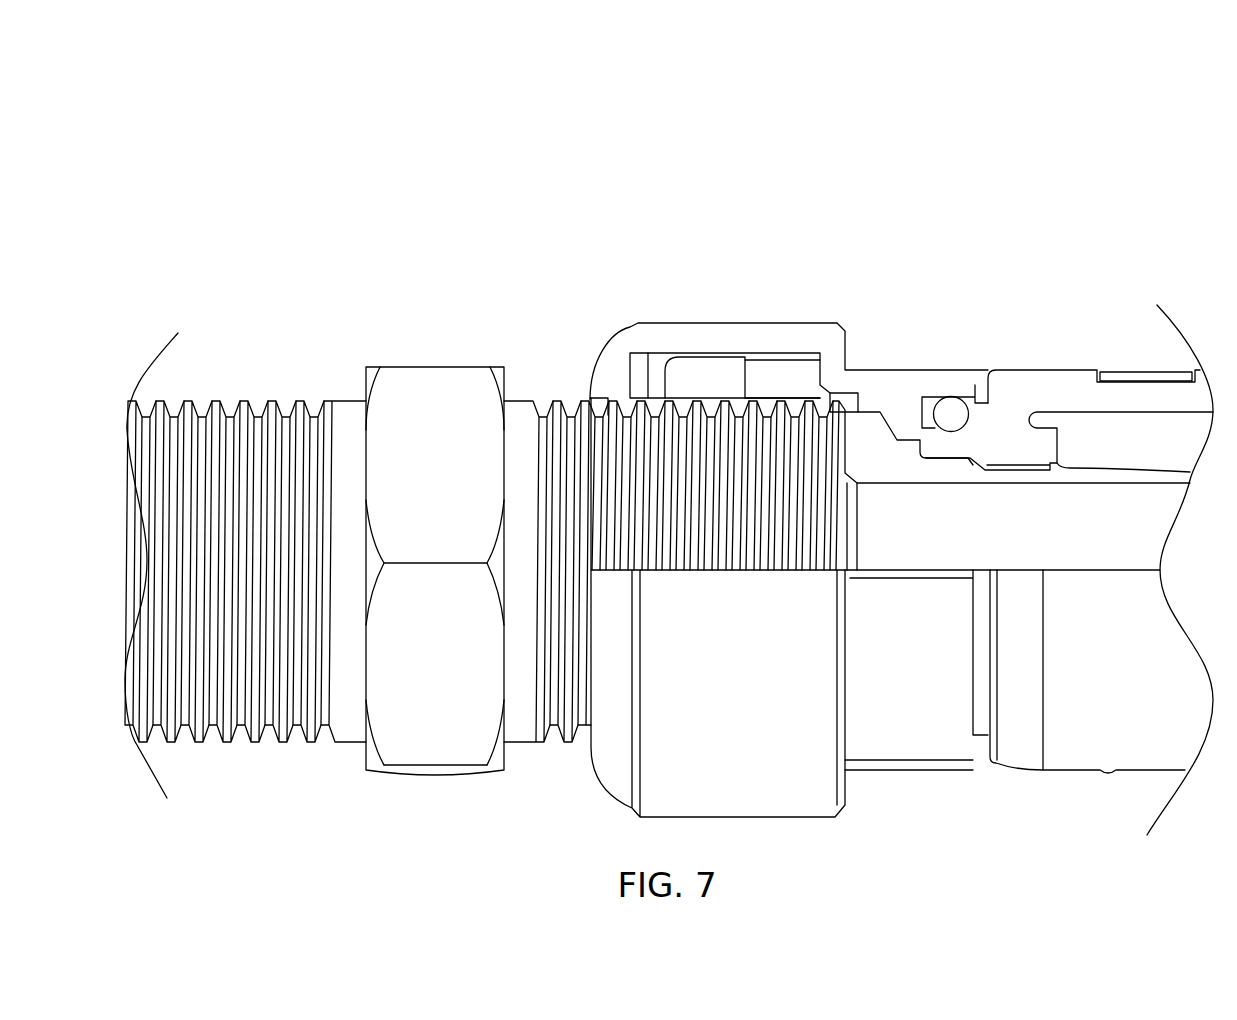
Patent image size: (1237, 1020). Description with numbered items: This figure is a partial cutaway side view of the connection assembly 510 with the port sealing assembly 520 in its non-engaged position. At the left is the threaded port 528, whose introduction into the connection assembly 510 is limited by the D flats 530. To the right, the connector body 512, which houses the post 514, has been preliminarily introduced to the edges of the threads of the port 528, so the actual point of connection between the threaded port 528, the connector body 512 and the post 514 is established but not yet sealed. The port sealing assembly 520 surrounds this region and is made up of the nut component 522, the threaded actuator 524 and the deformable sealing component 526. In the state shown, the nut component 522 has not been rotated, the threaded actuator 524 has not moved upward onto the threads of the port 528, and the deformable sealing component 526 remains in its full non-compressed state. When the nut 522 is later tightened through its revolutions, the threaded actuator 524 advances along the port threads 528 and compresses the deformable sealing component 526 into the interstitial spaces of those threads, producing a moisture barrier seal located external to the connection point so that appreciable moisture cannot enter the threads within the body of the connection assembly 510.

The connection assembly 510 is at (1040, 117).
The connector body 512 is at (1068, 370).
The post 514 is at (947, 376).
The port sealing assembly 520 is at (760, 478).
The nut component 522 is at (845, 350).
The threaded actuator 524 is at (787, 372).
The deformable sealing component 526 is at (700, 367).
The threaded port 528 is at (271, 404).
The D flats 530 is at (423, 367).